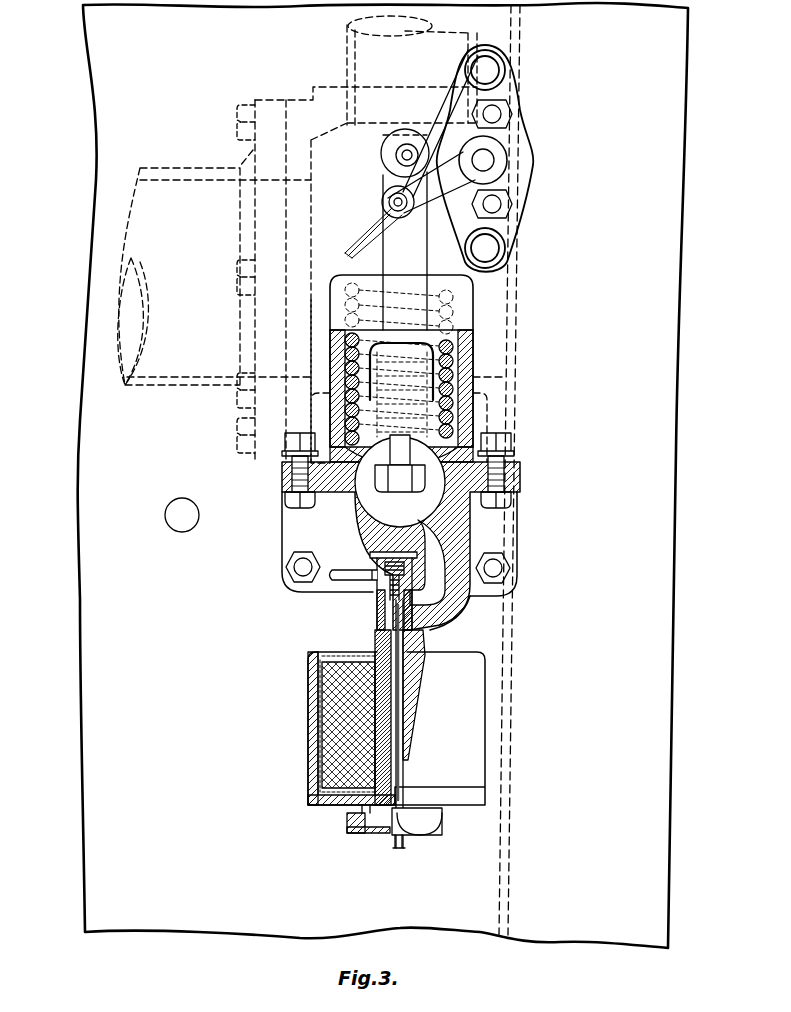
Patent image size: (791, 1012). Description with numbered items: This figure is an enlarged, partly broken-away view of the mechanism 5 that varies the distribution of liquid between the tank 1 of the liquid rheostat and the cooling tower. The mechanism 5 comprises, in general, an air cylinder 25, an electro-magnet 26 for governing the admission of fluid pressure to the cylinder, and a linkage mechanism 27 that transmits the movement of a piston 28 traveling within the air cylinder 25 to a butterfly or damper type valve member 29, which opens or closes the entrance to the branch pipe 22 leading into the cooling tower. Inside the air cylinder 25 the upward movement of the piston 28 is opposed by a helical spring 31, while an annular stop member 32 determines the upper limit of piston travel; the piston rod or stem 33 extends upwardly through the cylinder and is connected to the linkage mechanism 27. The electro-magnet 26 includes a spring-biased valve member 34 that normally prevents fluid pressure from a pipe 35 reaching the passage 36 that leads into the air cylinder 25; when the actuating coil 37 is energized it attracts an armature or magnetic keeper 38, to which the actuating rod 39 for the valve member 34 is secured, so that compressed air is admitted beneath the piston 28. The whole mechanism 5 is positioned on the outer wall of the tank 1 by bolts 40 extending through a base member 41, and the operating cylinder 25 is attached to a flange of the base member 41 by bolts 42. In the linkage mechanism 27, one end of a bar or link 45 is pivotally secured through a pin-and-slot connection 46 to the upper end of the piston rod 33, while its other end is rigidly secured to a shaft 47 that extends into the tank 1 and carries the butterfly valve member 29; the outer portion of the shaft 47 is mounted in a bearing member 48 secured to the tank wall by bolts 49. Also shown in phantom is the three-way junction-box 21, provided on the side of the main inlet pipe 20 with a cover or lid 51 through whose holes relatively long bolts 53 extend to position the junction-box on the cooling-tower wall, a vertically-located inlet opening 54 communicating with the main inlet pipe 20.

The tank 1 is at (90, 470).
The mechanism 5 is at (235, 515).
The main inlet pipe 20 is at (157, 383).
The three-way connection or junction-box 21 is at (308, 106).
The branch pipe 22 is at (347, 47).
The air cylinder 25 is at (468, 350).
The electro-magnet 26 is at (485, 727).
The linkage mechanism 27 is at (382, 190).
The piston 28 is at (463, 461).
The valve member 29 is at (363, 241).
The helical spring 31 is at (448, 393).
The annular stop member 32 is at (435, 372).
The piston rod or stem 33 is at (415, 413).
The valve member 34 is at (373, 595).
The pipe 35 is at (340, 574).
The passage 36 is at (458, 602).
The actuating coil 37 is at (332, 707).
The armature or magnetic keeper 38 is at (375, 812).
The actuating rod 39 is at (398, 842).
The bolts 40 is at (510, 568).
The base member 41 is at (292, 531).
The bolts 42 is at (500, 507).
The bar or link 45 is at (433, 157).
The pin-and-slot connection 46 is at (382, 203).
The shaft 47 is at (483, 160).
The bearing member 48 is at (524, 145).
The bolts 49 is at (543, 247).
The cover or lid 51 is at (250, 330).
The bolts 53 is at (235, 424).
The inlet opening 54 is at (298, 378).